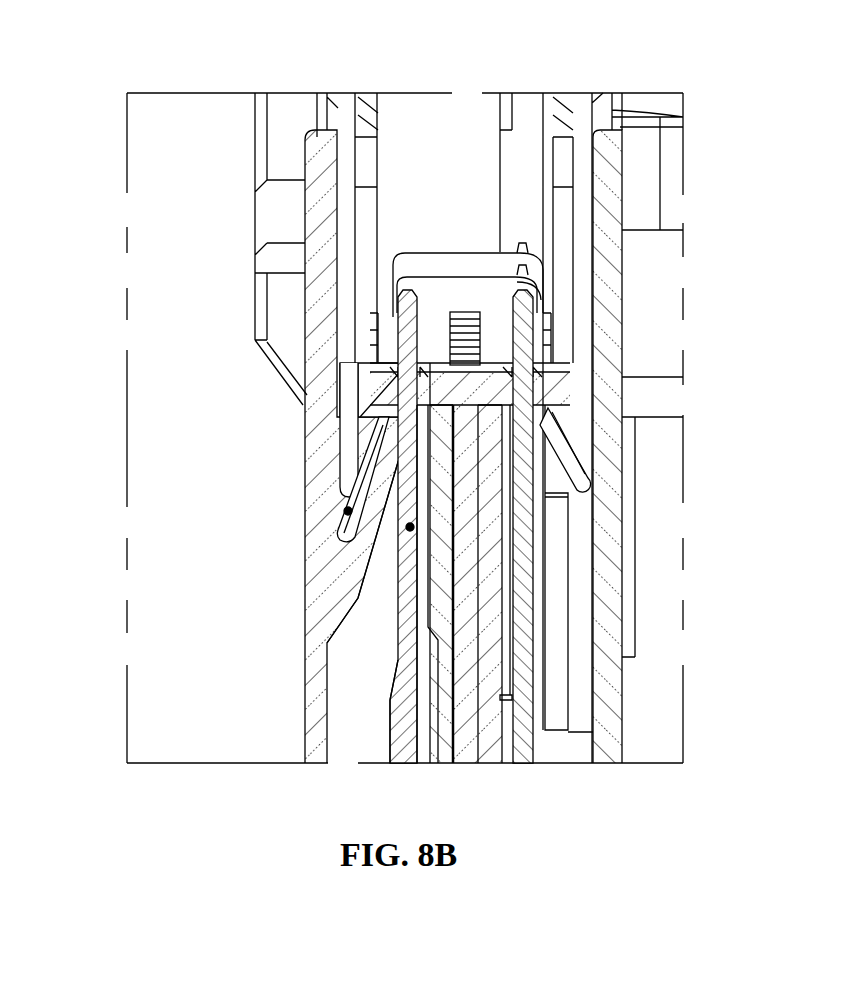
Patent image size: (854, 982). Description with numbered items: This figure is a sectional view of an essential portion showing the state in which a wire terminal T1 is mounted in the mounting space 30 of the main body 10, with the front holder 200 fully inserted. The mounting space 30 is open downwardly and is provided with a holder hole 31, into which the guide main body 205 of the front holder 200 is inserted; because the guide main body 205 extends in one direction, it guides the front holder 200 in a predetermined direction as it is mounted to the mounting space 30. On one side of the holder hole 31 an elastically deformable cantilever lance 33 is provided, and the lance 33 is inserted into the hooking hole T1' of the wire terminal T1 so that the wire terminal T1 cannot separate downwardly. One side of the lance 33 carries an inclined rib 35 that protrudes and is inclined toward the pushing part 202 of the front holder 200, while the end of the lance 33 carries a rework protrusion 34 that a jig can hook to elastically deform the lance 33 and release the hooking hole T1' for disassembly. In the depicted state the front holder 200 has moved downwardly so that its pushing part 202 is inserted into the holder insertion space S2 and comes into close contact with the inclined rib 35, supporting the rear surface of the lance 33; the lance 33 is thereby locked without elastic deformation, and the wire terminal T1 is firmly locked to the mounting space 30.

The main body 10 is at (190, 278).
The mounting space 30 is at (292, 643).
The holder hole 31 is at (470, 665).
The lance 33 is at (388, 523).
The rework protrusion 34 is at (385, 428).
The inclined rib 35 is at (372, 478).
The holder insertion space S2 is at (344, 511).
The front holder 200 is at (506, 232).
The pushing part 202 is at (368, 388).
The guide main body 205 is at (393, 767).
The wire terminal T1 is at (457, 177).
The hooking hole T1' is at (580, 584).